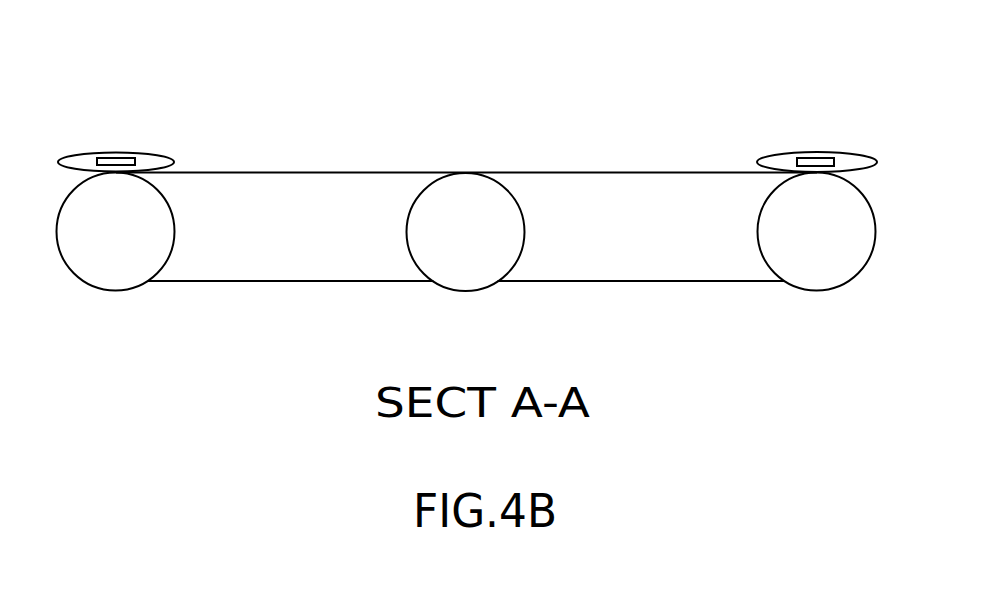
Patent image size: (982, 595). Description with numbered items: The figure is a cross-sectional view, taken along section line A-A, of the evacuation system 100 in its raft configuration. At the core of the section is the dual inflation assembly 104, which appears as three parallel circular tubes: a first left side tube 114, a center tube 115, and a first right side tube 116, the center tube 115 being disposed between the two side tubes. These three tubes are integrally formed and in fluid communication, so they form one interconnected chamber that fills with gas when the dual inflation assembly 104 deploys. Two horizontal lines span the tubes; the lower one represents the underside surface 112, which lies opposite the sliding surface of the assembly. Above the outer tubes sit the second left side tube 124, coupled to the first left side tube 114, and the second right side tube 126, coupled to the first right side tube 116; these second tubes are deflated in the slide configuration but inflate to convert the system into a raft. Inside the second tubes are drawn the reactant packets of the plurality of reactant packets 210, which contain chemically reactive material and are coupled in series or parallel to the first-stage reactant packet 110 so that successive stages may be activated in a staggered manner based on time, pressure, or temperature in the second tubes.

The evacuation system 100 is at (467, 218).
The dual inflation assembly 104 is at (466, 223).
The reactant packet 110 is at (263, 172).
The underside surface 112 is at (625, 278).
The first left side tube 114 is at (98, 253).
The center tube 115 is at (442, 272).
The first right side tube 116 is at (808, 252).
The second left side tube 124 is at (150, 158).
The second right side tube 126 is at (790, 160).
The plurality of reactant packets 210 is at (105, 142).